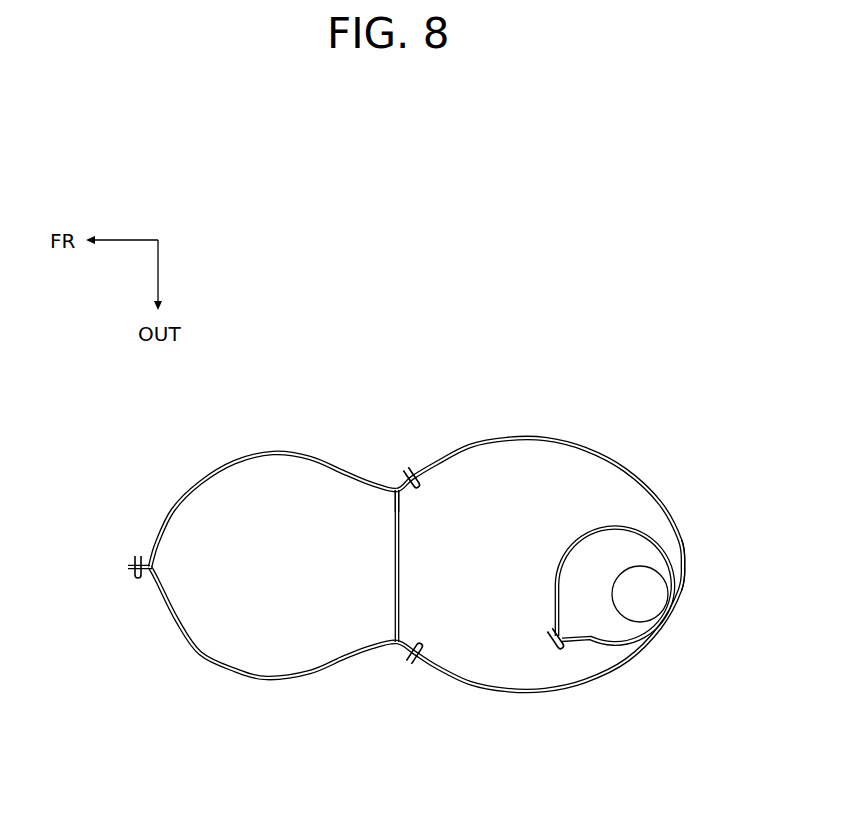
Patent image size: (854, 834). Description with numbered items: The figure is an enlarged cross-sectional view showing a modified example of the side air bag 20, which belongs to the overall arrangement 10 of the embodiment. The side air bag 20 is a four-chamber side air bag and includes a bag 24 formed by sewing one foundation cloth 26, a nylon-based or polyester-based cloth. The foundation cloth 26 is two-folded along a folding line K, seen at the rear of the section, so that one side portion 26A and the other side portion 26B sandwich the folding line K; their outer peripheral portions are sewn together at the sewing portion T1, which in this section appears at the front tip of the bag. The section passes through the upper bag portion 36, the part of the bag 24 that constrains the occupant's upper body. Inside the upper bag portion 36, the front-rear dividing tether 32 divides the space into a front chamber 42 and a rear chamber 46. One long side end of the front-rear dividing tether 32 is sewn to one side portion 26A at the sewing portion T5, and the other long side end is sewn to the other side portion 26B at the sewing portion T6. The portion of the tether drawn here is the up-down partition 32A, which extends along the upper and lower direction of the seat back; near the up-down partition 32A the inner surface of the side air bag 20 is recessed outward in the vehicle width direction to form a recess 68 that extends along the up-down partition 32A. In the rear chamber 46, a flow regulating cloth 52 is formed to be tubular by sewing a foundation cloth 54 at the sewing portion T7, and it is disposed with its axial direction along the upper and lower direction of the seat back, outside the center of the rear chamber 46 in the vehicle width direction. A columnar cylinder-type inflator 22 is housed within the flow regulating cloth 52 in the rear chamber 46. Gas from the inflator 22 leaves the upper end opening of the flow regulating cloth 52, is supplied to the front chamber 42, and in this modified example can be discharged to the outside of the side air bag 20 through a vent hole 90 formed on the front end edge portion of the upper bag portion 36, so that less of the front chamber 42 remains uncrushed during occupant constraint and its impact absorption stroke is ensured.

The tank assembly 10 is at (576, 332).
The side air bag 20 is at (370, 689).
The inflator 22 is at (637, 622).
The bag 24 is at (506, 437).
The foundation cloth 26 is at (541, 474).
The one side portion 26A is at (267, 681).
The other side portion 26B is at (274, 452).
The front-rear dividing tether 32 is at (341, 566).
The up-down partition 32A is at (392, 597).
The upper bag portion 36 is at (479, 689).
The front chamber 42 is at (289, 572).
The rear chamber 46 is at (488, 572).
The flow regulating cloth 52 is at (628, 526).
The foundation cloth 54 is at (640, 549).
The recess 68 is at (392, 476).
The vent hole 90 is at (192, 505).
The folding line K is at (686, 554).
The sewing portion T1 is at (133, 566).
The sewing portion T5 is at (415, 666).
The sewing portion T6 is at (412, 467).
The sewing portion T7 is at (550, 634).